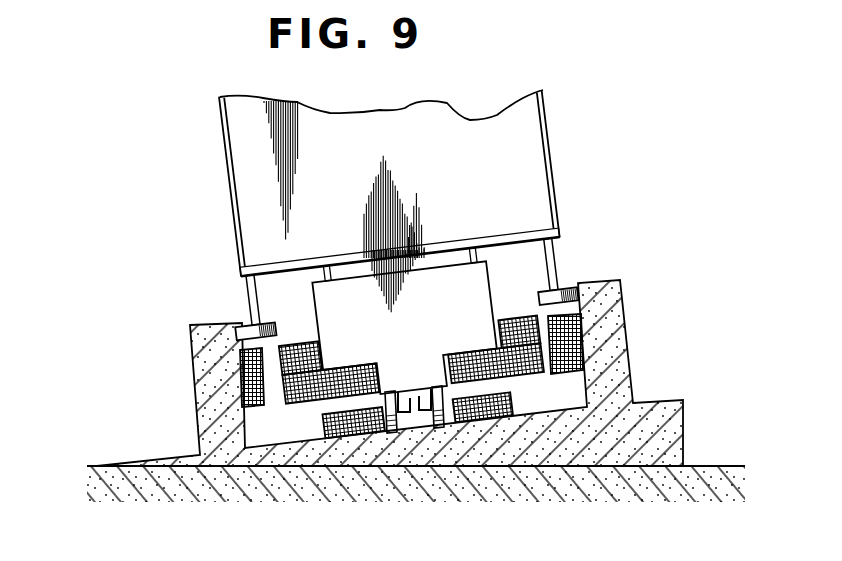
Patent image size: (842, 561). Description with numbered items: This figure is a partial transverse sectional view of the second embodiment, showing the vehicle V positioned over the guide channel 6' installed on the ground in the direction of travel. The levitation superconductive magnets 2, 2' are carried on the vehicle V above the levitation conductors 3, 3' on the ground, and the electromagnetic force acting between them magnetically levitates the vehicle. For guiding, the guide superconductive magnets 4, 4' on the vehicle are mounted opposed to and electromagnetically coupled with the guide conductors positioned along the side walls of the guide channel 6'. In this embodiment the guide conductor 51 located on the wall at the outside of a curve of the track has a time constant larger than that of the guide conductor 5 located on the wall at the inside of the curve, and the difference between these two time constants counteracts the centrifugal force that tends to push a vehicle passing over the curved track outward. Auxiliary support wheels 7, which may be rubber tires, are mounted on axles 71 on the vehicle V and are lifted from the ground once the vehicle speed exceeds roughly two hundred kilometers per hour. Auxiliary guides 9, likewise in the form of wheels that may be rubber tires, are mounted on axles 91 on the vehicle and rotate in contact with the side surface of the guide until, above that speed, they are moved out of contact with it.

The vehicle V is at (547, 152).
The axle 91 is at (248, 294).
The auxiliary guide 9 is at (242, 330).
The guide superconductive magnet 4 is at (300, 341).
The levitation superconductive magnet 2 is at (330, 370).
The axle 71 is at (426, 388).
The levitation superconductive magnet 2' is at (496, 347).
The guide superconductive magnet 4' is at (519, 314).
The guide conductor 51 is at (582, 333).
The guide conductor 5 is at (236, 398).
The guide channel 6' is at (678, 433).
The auxiliary support wheel 7 is at (427, 428).
The levitation conductor 3' is at (417, 429).
The levitation conductor 3 is at (353, 452).